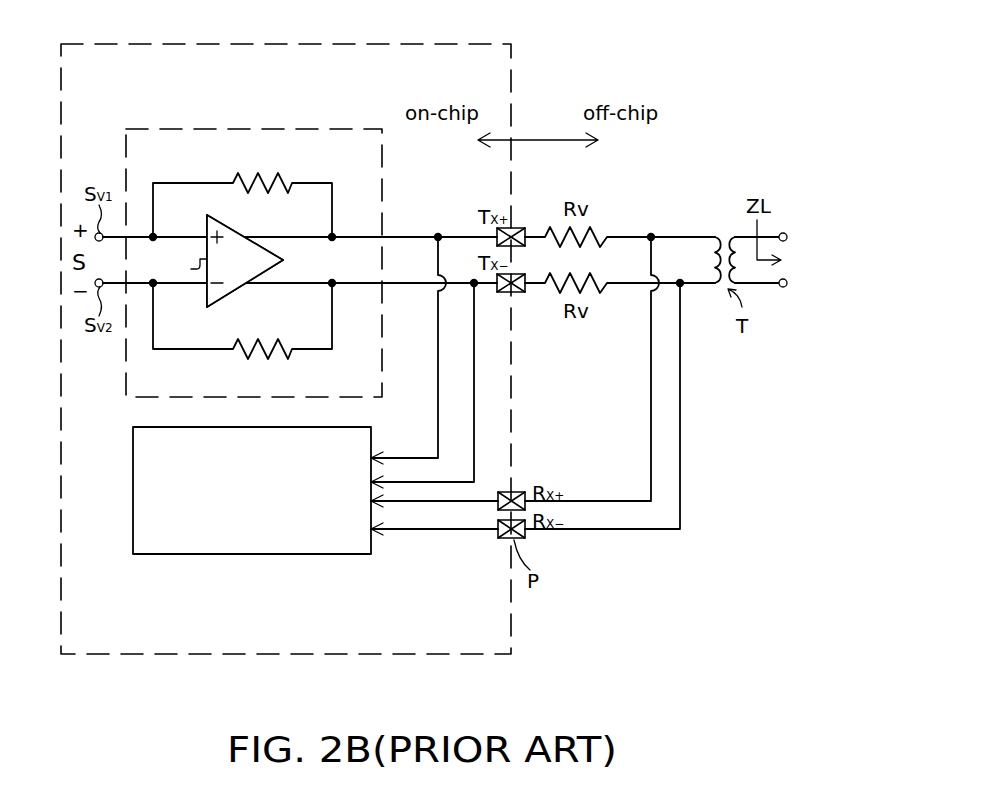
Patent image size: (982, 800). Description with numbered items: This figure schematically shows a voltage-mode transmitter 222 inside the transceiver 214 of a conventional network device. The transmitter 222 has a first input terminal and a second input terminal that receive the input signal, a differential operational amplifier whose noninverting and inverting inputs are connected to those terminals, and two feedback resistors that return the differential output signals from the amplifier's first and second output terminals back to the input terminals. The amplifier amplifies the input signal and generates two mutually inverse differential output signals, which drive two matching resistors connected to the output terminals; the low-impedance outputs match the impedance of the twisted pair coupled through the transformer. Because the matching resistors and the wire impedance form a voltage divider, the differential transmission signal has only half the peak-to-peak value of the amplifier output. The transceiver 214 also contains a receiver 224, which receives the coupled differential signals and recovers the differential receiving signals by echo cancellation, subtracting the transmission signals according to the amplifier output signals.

The transceiver 214 is at (175, 44).
The transmitter 222 is at (228, 129).
The receiver 224 is at (225, 555).